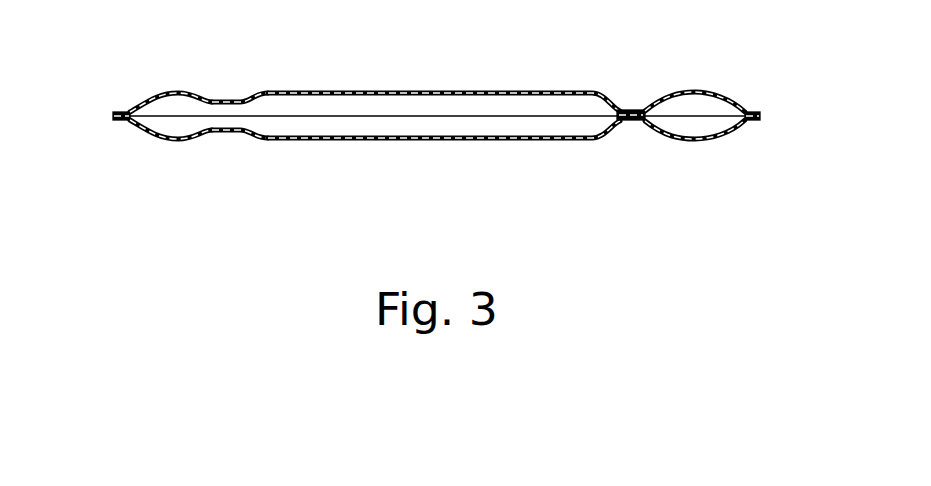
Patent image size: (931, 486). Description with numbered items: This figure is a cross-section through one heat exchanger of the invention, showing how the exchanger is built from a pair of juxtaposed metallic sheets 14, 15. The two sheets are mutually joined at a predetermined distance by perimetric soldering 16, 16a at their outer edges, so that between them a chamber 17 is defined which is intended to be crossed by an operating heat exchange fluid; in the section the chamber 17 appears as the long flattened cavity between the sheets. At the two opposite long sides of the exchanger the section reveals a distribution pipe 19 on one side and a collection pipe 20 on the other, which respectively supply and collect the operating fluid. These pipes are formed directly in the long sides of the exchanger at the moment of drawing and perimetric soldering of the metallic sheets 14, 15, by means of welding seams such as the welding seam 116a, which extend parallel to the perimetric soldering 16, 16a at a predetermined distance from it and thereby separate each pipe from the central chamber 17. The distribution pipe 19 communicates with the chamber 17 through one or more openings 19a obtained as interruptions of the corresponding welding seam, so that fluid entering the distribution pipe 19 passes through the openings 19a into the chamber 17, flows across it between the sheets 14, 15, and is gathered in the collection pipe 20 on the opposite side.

The metallic sheet 14 is at (434, 139).
The metallic sheet 15 is at (432, 93).
The perimetric soldering 16 is at (117, 121).
The perimetric soldering 16a is at (757, 122).
The welding seam 116a is at (632, 122).
The chamber 17 is at (533, 122).
The distribution pipe 19 is at (167, 111).
The openings 19a is at (228, 111).
The collection pipe 20 is at (690, 105).